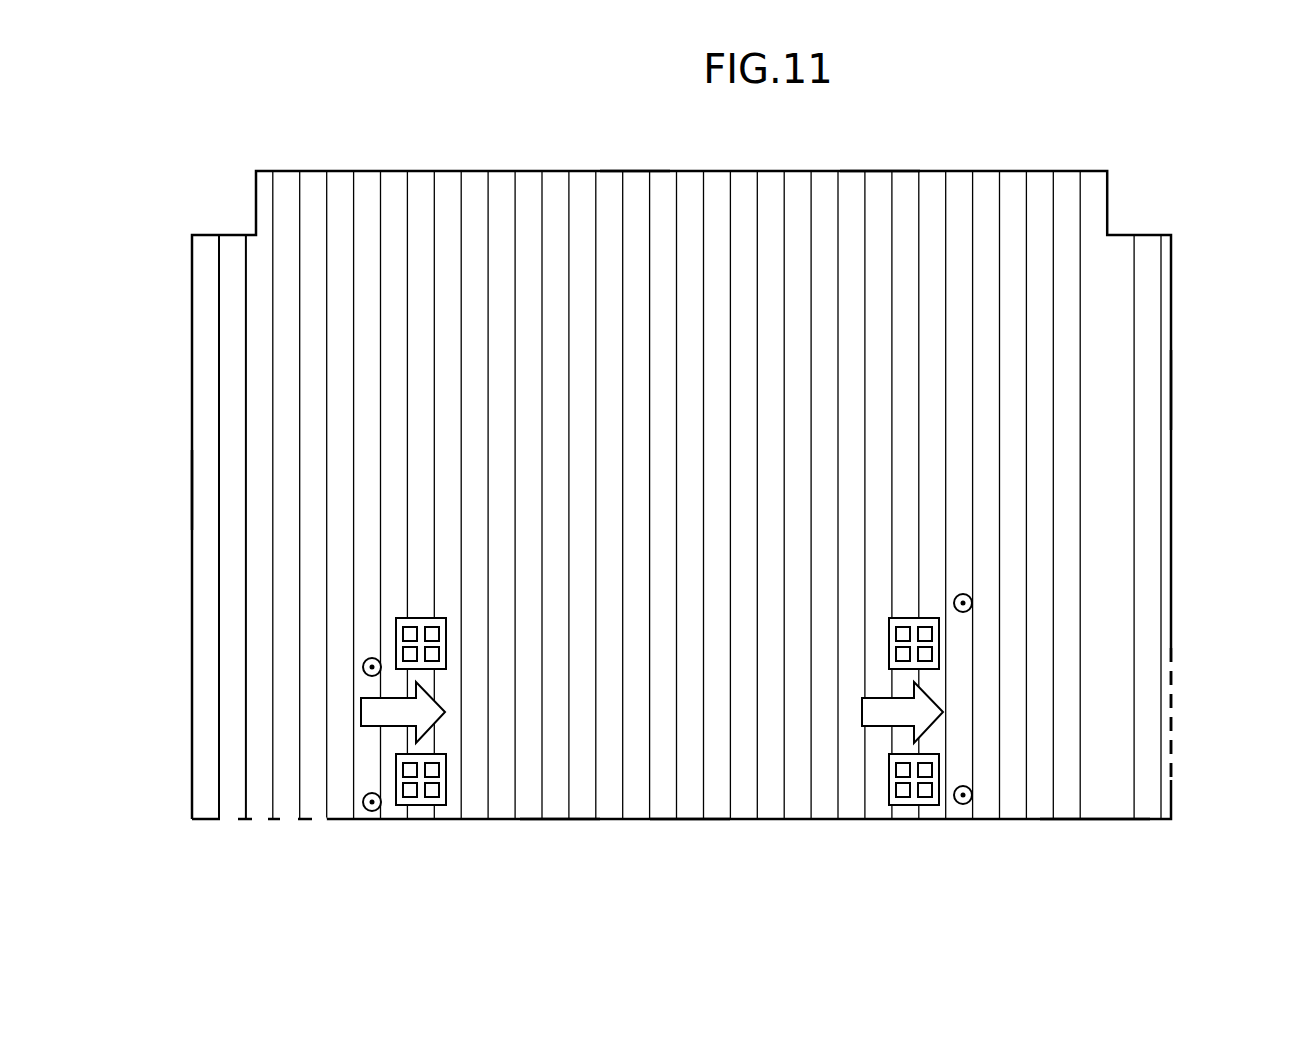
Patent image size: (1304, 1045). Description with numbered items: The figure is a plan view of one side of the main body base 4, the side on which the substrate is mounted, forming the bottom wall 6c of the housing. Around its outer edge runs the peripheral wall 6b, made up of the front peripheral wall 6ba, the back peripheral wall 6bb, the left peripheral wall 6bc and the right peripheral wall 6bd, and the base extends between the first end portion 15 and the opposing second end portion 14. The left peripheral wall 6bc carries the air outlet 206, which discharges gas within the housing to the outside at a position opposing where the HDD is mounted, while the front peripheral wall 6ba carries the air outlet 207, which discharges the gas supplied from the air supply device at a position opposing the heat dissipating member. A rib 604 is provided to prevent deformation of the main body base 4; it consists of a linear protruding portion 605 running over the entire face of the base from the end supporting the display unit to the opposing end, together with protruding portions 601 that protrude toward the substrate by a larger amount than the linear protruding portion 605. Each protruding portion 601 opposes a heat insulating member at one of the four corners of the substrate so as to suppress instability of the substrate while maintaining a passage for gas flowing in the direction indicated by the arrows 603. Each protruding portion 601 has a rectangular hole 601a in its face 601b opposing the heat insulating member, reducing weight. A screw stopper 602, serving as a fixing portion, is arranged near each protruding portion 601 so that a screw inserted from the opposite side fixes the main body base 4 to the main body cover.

The main body base 4 is at (724, 150).
The second end portion 14 is at (690, 820).
The first end portion 15 is at (635, 171).
The peripheral wall 6b is at (1063, 820).
The bottom wall 6c is at (1118, 820).
The front peripheral wall 6ba is at (555, 820).
The back peripheral wall 6bb is at (878, 171).
The left peripheral wall 6bc is at (1172, 391).
The right peripheral wall 6bd is at (192, 492).
The air outlet 206 is at (1171, 658).
The air outlet 207 is at (227, 821).
The protruding portion 601 is at (396, 627).
The rectangular hole 601a is at (410, 634).
The face 601b is at (416, 631).
The screw stopper 602 is at (363, 667).
The arrows 603 is at (361, 706).
The rib 604 is at (240, 298).
The linear protruding portion 605 is at (299, 189).